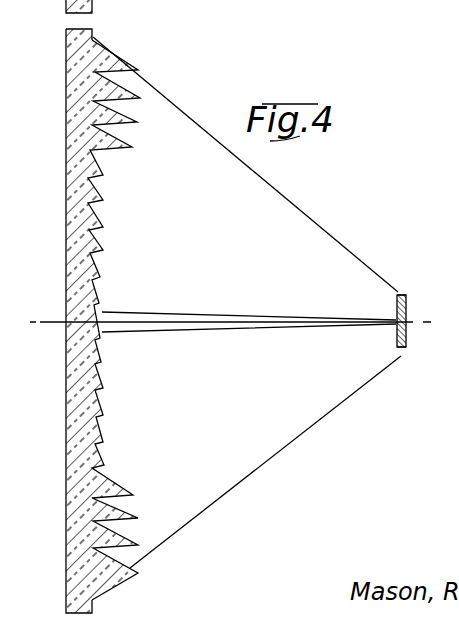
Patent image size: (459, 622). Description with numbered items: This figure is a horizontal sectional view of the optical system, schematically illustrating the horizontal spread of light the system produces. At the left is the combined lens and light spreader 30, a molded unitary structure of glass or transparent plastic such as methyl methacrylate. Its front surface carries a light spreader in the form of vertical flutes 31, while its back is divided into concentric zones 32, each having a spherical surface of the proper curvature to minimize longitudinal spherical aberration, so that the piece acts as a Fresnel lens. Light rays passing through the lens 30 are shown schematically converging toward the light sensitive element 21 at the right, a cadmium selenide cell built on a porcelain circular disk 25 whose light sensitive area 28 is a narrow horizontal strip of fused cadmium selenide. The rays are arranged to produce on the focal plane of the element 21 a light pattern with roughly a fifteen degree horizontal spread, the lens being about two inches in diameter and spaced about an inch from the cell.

The light sensitive element 21 is at (407, 303).
The circular disk 25 is at (406, 344).
The light sensitive area 28 is at (402, 294).
The combined lens and light spreader 30 is at (93, 38).
The vertical flutes 31 is at (66, 260).
The concentric zones 32 is at (128, 98).